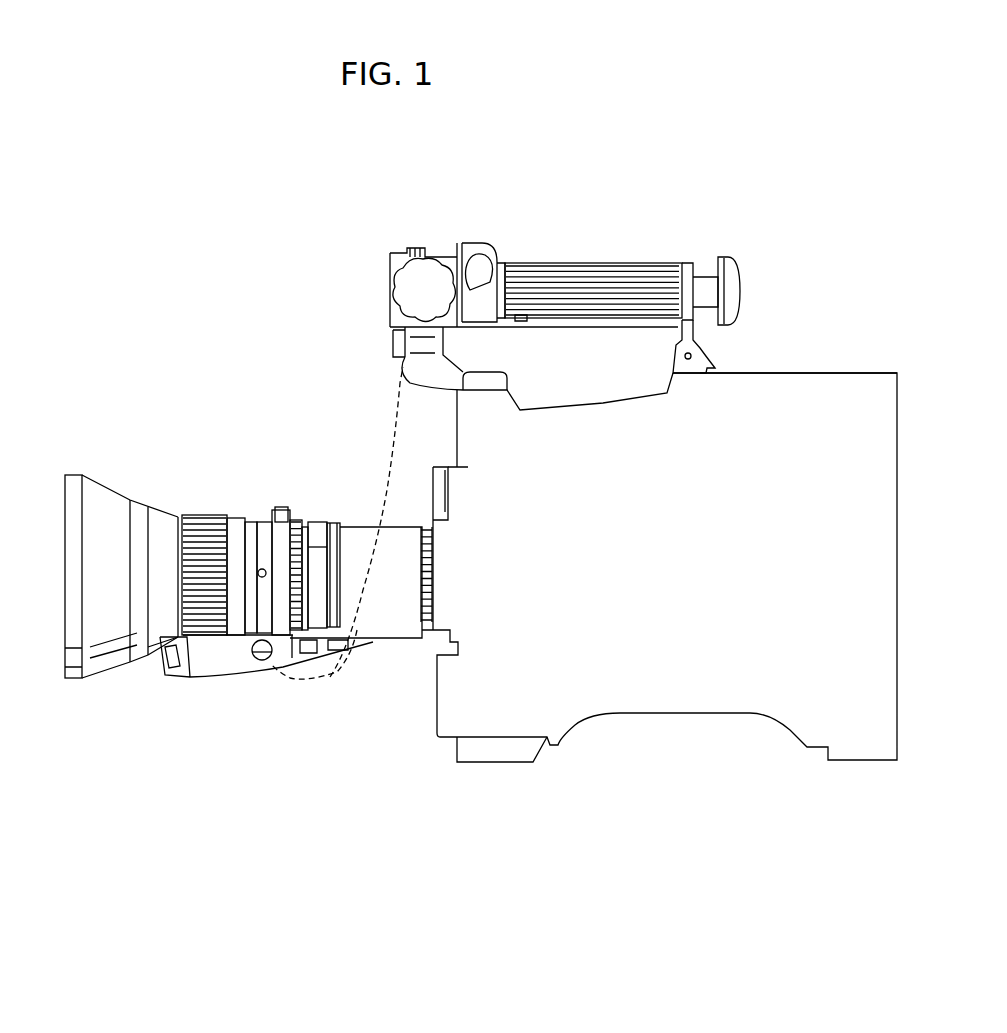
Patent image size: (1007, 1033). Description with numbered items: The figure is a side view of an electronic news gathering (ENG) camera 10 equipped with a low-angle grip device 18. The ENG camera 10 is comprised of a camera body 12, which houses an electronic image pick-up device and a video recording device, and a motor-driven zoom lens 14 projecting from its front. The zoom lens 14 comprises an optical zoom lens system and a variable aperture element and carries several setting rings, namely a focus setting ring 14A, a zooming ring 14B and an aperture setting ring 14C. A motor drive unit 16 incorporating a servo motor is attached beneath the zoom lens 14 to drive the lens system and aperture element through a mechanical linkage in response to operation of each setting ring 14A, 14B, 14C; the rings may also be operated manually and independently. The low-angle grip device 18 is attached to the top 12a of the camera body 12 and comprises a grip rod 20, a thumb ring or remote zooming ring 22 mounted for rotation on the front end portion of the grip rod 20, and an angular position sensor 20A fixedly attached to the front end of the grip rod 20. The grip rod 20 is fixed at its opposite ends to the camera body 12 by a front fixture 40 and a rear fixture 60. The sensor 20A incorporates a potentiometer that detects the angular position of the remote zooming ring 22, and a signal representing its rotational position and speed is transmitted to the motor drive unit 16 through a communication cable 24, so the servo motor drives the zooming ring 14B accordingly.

The electronic news gathering (ENG) camera 10 is at (272, 260).
The camera body 12 is at (884, 538).
The top 12a is at (784, 373).
The zoom lens 14 is at (167, 513).
The focus setting ring 14A is at (237, 517).
The zooming ring 14B is at (290, 518).
The aperture setting ring 14C is at (330, 523).
The motor drive unit 16 is at (238, 663).
The low-angle grip device 18 is at (554, 257).
The grip rod 20 is at (650, 263).
The angular position sensor 20A is at (391, 252).
The remote zooming ring 22 is at (469, 246).
The communication cable 24 is at (400, 343).
The front fixture 40 is at (447, 353).
The rear fixture 60 is at (688, 351).